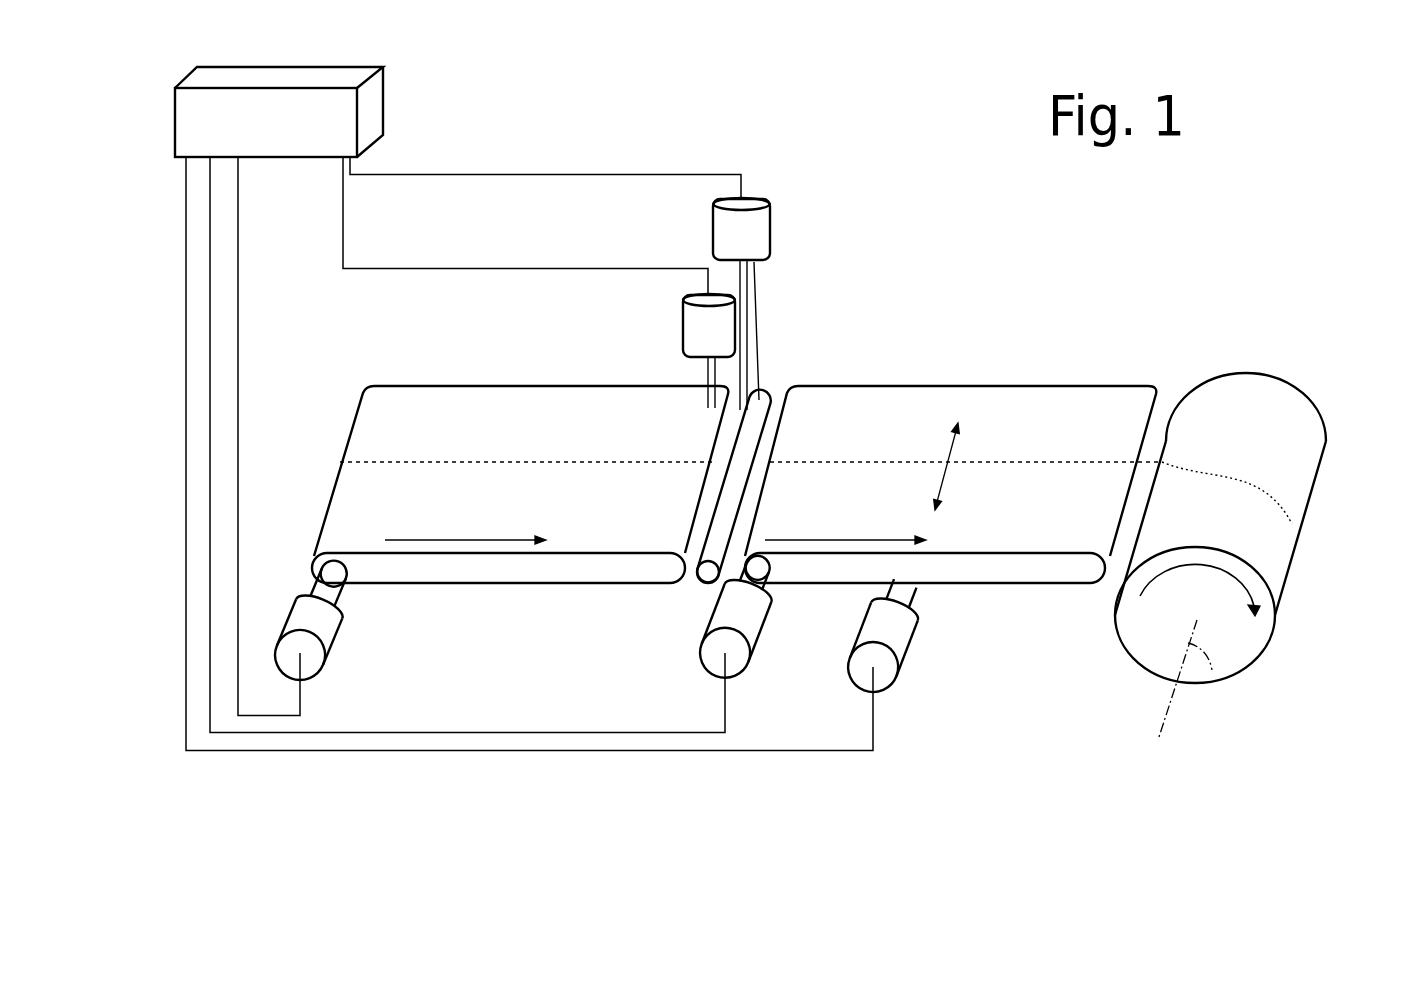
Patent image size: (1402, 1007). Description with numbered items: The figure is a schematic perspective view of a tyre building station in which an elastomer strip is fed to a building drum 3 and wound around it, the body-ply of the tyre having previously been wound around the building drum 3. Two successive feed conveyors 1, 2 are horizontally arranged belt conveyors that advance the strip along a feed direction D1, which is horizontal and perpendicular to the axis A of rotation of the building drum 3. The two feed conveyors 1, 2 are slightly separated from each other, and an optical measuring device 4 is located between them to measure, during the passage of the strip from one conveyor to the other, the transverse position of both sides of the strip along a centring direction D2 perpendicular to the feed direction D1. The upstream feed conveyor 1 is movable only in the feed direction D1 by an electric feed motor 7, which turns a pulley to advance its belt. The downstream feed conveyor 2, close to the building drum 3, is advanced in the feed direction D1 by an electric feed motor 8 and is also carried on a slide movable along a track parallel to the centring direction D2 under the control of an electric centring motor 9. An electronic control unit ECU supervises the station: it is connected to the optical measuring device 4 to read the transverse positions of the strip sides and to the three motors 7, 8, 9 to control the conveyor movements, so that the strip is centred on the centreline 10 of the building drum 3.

The feed conveyor 1 is at (500, 405).
The feed conveyor 2 is at (1008, 417).
The building drum 3 is at (1300, 423).
The optical measuring device 4 is at (715, 340).
The electric feed motor 7 is at (322, 617).
The electric feed motor 8 is at (740, 617).
The electric centring motor 9 is at (898, 628).
The centreline 10 is at (575, 460).
The feed direction D1 is at (440, 542).
The centring direction D2 is at (945, 480).
The axis of rotation A is at (1212, 670).
The electronic control unit ECU is at (368, 108).